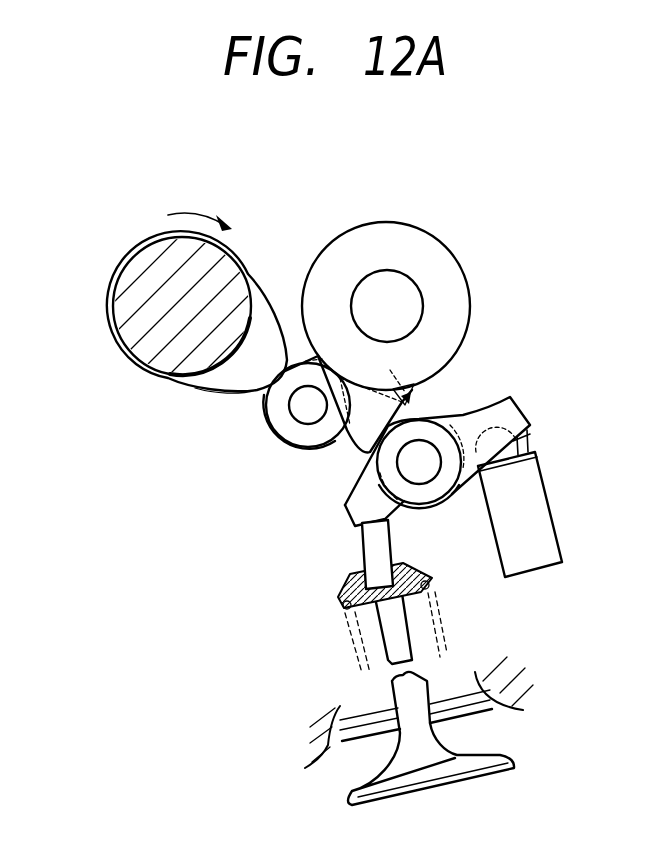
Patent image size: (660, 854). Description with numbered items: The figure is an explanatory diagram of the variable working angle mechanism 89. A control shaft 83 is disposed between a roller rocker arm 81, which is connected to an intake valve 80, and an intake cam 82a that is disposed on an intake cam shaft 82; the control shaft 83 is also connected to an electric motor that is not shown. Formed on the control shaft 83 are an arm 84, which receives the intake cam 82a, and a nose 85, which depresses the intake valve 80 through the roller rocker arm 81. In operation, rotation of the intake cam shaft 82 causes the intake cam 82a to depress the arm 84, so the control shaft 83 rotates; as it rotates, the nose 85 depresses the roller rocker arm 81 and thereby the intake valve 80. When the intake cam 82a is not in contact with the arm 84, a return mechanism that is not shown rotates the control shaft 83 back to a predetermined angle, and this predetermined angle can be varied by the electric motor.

The intake valve 80 is at (457, 753).
The roller rocker arm 81 is at (505, 393).
The intake cam shaft 82 is at (138, 272).
The intake cam 82a is at (203, 381).
The control shaft 83 is at (382, 288).
The arm 84 is at (276, 402).
The nose 85 is at (365, 440).
The variable working angle mechanism 89 is at (460, 208).